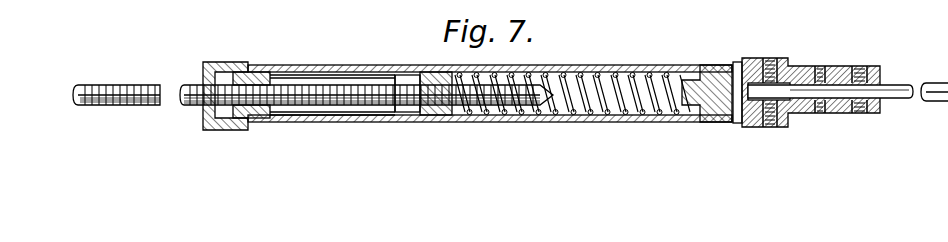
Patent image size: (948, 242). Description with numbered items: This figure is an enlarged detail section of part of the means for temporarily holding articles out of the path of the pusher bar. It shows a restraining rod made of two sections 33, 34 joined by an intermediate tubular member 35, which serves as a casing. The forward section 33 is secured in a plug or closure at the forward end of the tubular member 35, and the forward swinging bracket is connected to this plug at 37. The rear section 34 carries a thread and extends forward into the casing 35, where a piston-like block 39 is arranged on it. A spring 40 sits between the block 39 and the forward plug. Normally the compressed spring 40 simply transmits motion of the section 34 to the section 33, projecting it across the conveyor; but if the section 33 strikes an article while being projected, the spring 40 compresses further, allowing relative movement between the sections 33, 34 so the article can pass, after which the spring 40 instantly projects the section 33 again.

The restraining rod section 33 is at (897, 84).
The restraining rod section 34 is at (141, 72).
The intermediate tubular member 35 is at (397, 56).
The connection of forward bracket to plug 37 is at (763, 49).
The piston-like block 39 is at (441, 113).
The spring 40 is at (590, 106).